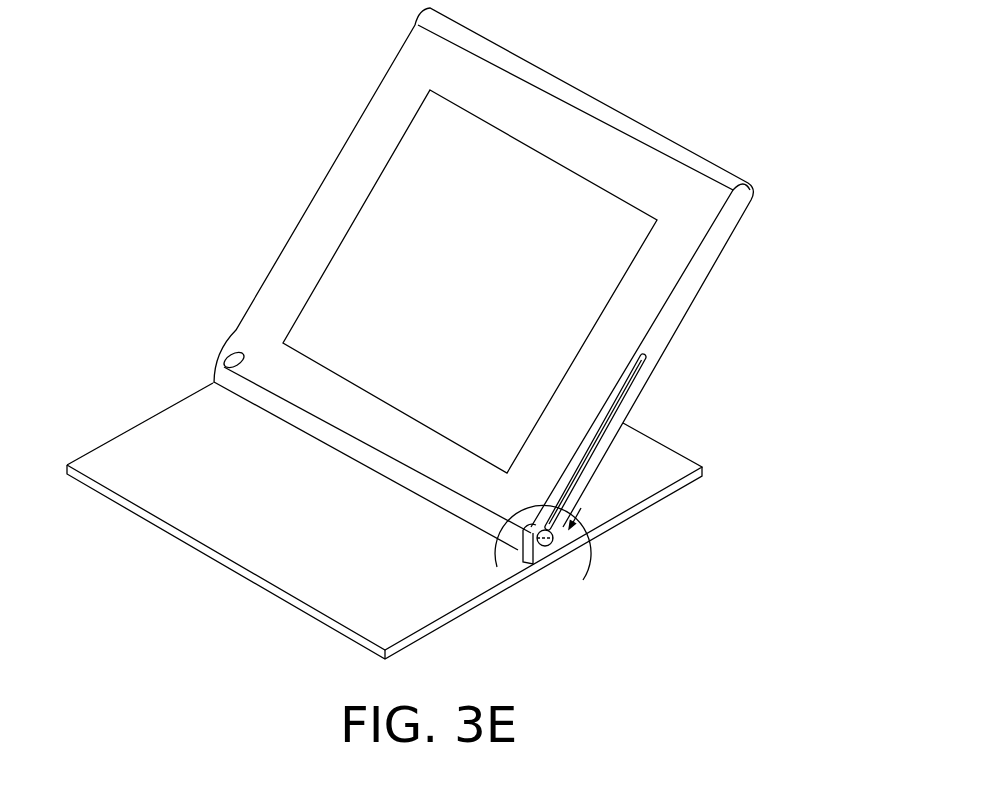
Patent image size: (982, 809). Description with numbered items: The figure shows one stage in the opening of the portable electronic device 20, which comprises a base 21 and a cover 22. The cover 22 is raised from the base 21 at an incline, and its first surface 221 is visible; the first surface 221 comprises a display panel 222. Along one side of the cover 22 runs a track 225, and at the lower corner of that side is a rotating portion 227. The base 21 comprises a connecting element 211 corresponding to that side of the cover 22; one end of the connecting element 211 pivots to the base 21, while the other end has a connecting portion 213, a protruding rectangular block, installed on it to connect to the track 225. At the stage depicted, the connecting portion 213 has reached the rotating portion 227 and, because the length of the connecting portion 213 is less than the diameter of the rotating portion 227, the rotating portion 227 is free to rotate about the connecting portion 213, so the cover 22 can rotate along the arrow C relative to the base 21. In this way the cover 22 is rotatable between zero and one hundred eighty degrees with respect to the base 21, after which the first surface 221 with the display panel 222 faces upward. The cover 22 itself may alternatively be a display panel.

The portable electronic device 20 is at (461, 333).
The base 21 is at (434, 521).
The cover 22 is at (507, 291).
The first surface 221 is at (597, 149).
The display panel 222 is at (488, 282).
The track 225 is at (593, 445).
The connecting element 211 is at (543, 550).
The connecting portion 213 is at (648, 571).
The rotating portion 227 is at (650, 571).